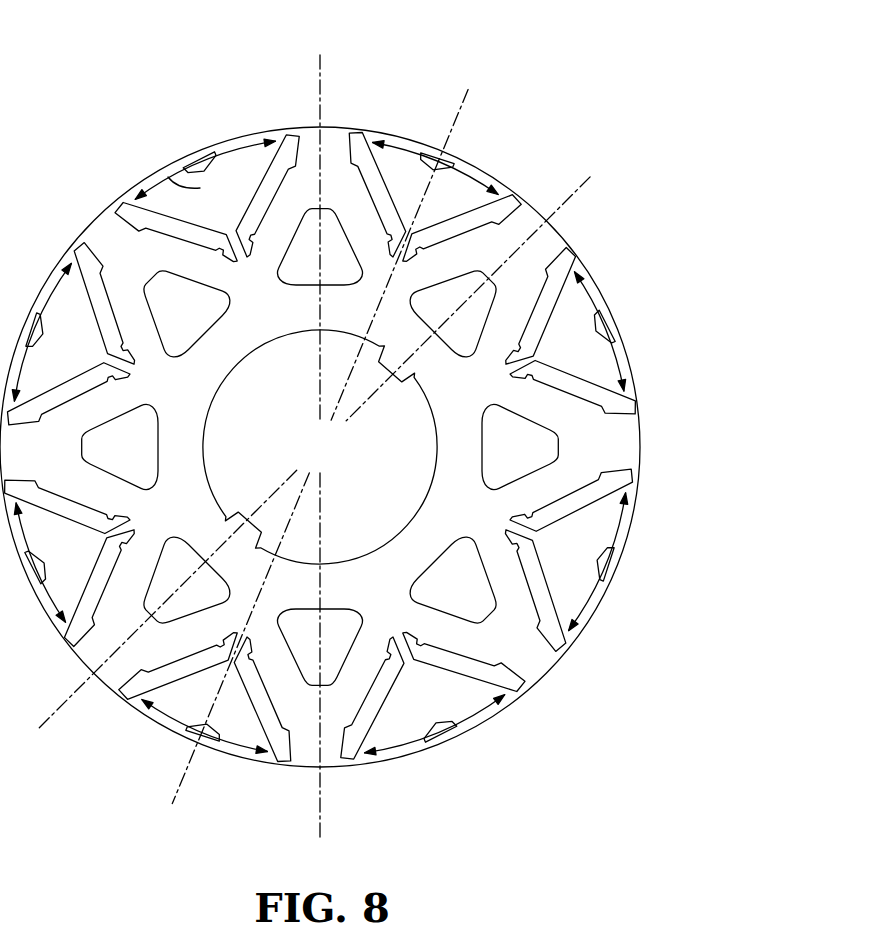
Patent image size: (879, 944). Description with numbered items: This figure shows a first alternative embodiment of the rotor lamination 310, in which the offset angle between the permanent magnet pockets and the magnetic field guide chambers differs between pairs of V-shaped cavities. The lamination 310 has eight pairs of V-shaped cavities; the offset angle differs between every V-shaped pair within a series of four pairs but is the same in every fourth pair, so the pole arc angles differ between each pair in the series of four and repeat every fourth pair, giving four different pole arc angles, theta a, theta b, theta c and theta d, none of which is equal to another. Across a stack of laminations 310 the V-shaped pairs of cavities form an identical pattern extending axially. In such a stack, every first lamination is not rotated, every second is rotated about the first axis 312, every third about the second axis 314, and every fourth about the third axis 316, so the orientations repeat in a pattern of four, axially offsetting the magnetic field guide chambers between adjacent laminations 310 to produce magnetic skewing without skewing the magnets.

The lamination 310 is at (125, 73).
The first axis 312 is at (318, 88).
The second axis 314 is at (462, 103).
The third axis 316 is at (586, 178).